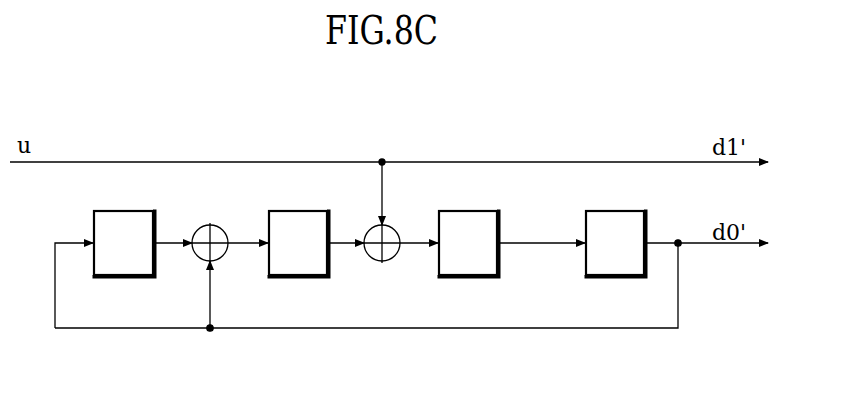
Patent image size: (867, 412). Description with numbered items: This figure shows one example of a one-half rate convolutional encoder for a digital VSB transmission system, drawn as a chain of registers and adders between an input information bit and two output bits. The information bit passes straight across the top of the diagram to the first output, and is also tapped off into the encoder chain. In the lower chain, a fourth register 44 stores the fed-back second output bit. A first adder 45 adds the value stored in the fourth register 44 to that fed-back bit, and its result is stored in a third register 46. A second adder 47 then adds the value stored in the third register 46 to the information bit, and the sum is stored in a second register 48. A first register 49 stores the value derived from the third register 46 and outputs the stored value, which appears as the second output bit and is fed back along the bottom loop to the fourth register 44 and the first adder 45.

The register M4 44 is at (123, 277).
The first adder 45 is at (221, 258).
The register M3 46 is at (297, 277).
The second adder 47 is at (393, 258).
The register M2 48 is at (466, 277).
The register M1 49 is at (613, 277).